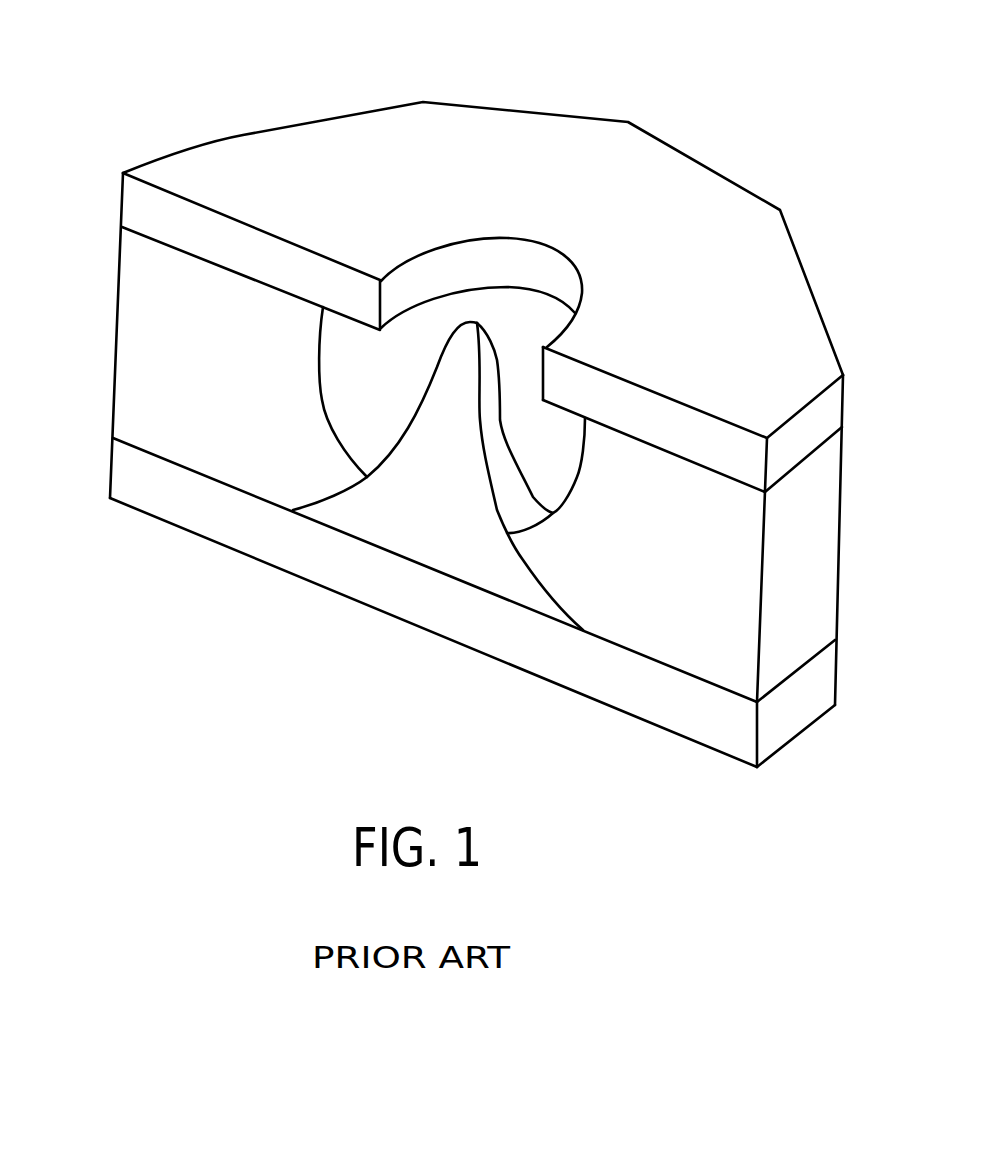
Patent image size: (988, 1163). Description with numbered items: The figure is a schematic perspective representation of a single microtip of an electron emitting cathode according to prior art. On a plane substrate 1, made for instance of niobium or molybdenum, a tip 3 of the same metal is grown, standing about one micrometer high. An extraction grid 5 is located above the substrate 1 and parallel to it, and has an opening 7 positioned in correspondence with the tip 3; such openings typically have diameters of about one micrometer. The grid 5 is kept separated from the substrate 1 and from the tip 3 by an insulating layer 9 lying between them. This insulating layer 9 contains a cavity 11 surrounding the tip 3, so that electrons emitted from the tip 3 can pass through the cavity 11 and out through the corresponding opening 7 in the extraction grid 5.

The plane substrate 1 is at (267, 535).
The tip 3 is at (520, 582).
The extraction grid 5 is at (223, 172).
The opening 7 is at (448, 261).
The insulating layer 9 is at (158, 308).
The cavity 11 is at (321, 364).